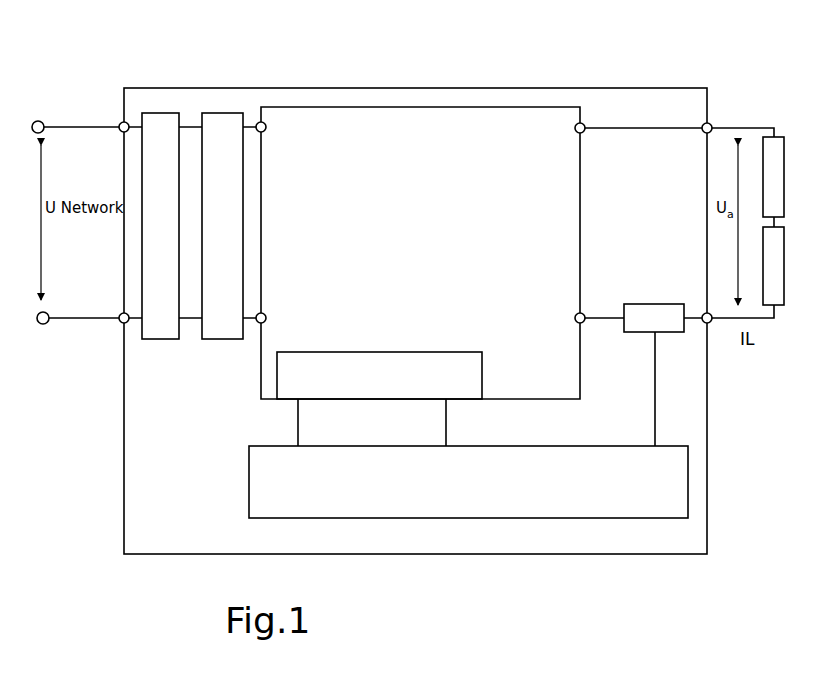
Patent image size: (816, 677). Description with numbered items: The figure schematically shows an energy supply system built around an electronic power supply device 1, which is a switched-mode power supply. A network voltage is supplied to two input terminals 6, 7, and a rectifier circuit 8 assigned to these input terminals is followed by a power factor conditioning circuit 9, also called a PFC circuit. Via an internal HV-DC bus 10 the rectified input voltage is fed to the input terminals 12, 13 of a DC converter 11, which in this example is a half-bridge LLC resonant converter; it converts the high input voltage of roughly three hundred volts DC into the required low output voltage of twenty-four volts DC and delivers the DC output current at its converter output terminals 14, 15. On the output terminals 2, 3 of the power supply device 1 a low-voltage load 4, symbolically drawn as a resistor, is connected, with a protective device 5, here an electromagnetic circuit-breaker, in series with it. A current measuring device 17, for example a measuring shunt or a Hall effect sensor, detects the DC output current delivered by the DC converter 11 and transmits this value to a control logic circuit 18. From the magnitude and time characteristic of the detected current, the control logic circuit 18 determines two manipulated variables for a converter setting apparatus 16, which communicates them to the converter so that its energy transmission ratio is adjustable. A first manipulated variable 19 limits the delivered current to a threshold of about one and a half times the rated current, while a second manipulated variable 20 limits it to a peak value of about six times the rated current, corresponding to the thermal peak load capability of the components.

The electronic power supply device 1 is at (457, 87).
The output terminal 2 is at (709, 125).
The output terminal 3 is at (712, 322).
The low-voltage load 4 is at (771, 157).
The protective device 5 is at (775, 292).
The input terminal 6 is at (120, 124).
The input terminal 7 is at (120, 322).
The rectifier circuit 8 is at (153, 125).
The power factor conditioning circuit 9 is at (216, 125).
The internal HV-DC bus 10 is at (252, 122).
The DC converter 11 is at (374, 104).
The input terminal of DC converter 12 is at (268, 127).
The input terminal of DC converter 13 is at (266, 314).
The converter output terminal 14 is at (575, 128).
The converter output terminal 15 is at (576, 318).
The converter setting apparatus 16 is at (372, 370).
The current measuring device 17 is at (650, 303).
The control logic circuit 18 is at (280, 485).
The first manipulated variable 19 is at (296, 420).
The second manipulated variable 20 is at (448, 426).